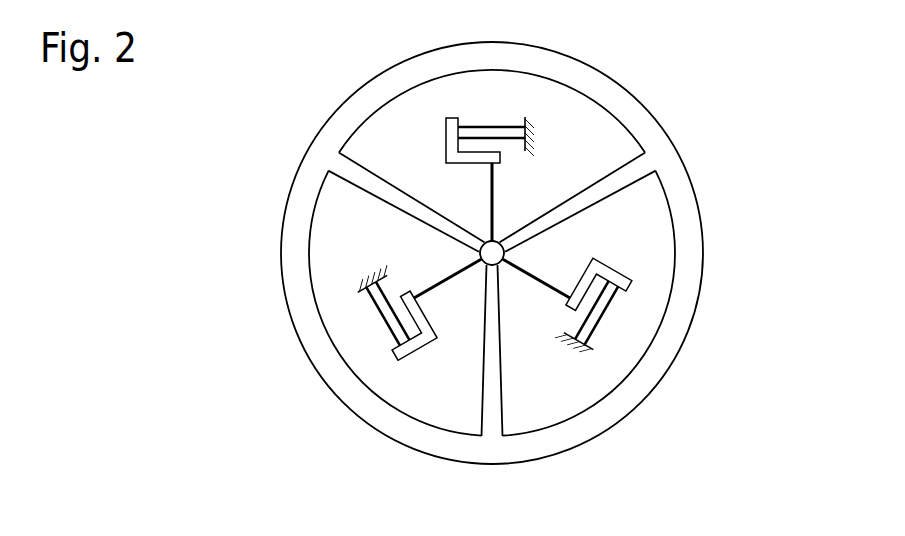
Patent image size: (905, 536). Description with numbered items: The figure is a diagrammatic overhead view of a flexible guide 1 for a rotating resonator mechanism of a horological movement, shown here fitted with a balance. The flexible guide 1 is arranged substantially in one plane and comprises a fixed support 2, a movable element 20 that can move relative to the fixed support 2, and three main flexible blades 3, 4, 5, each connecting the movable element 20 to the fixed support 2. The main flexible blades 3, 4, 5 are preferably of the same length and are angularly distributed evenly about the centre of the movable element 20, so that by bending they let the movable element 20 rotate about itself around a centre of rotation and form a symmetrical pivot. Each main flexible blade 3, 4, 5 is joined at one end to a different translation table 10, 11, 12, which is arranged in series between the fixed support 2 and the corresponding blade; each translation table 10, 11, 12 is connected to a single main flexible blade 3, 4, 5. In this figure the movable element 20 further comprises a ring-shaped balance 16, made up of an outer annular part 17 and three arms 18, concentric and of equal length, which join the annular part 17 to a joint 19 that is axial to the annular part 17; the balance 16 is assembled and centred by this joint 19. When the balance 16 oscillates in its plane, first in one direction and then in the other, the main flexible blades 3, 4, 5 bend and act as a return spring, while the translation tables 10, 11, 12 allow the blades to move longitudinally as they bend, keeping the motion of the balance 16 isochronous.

The flexible guide 1 is at (273, 60).
The fixed support 2 is at (540, 125).
The main flexible blade 3 is at (500, 217).
The main flexible blade 4 is at (447, 283).
The main flexible blade 5 is at (542, 290).
The translation table 10 is at (553, 120).
The translation table 11 is at (632, 310).
The translation table 12 is at (382, 362).
The balance 16 is at (270, 243).
The outer annular part 17 is at (307, 150).
The arms 18 is at (365, 197).
The joint 19 is at (505, 254).
The movable element 20 is at (712, 105).